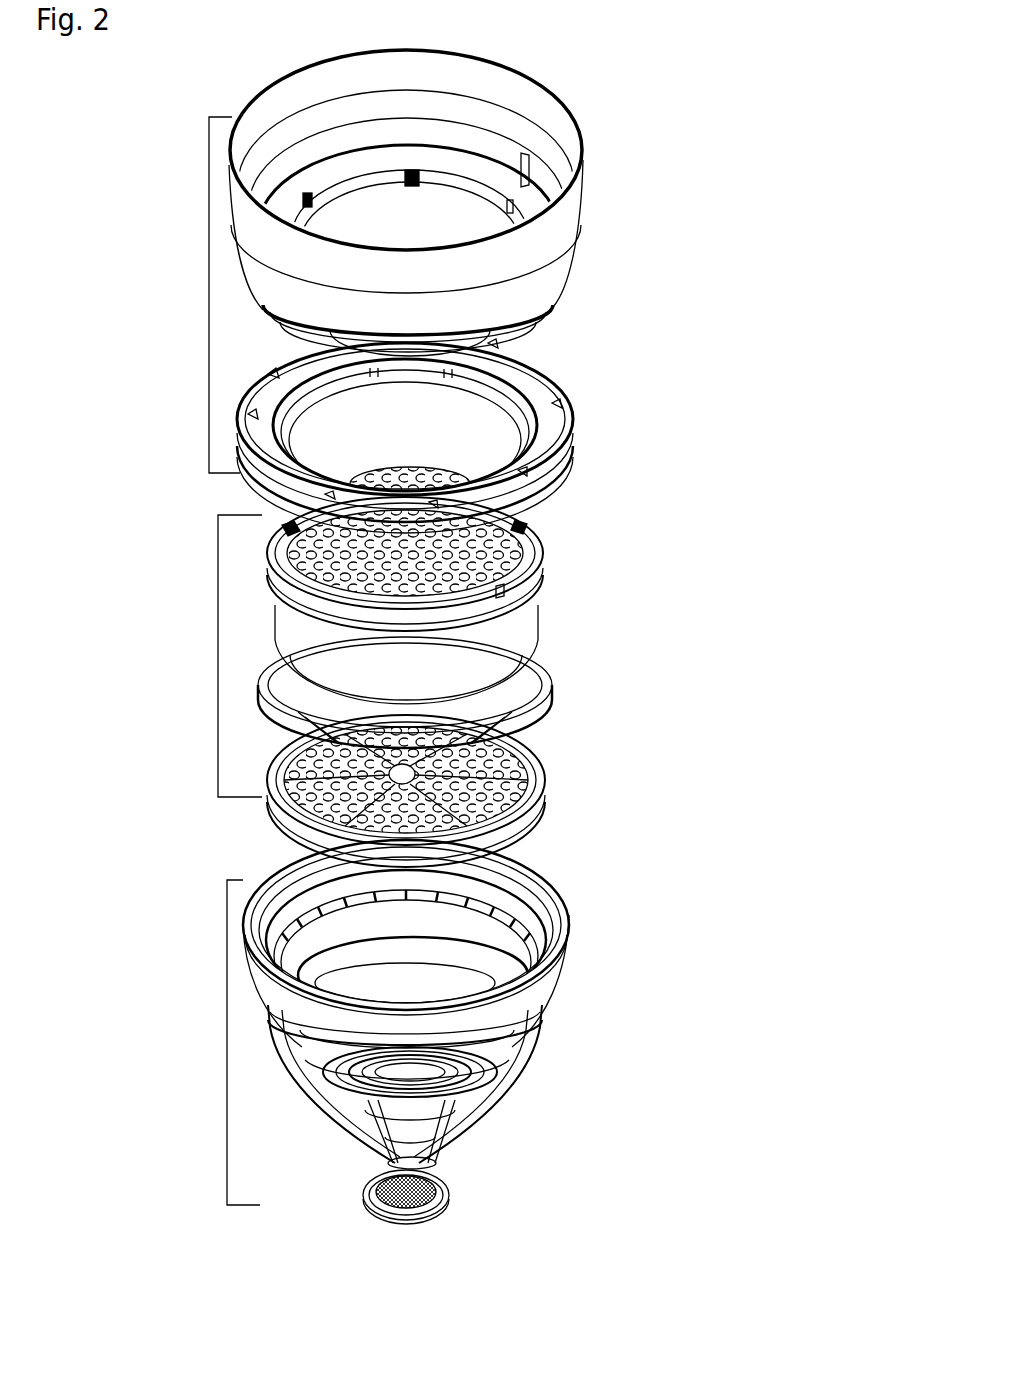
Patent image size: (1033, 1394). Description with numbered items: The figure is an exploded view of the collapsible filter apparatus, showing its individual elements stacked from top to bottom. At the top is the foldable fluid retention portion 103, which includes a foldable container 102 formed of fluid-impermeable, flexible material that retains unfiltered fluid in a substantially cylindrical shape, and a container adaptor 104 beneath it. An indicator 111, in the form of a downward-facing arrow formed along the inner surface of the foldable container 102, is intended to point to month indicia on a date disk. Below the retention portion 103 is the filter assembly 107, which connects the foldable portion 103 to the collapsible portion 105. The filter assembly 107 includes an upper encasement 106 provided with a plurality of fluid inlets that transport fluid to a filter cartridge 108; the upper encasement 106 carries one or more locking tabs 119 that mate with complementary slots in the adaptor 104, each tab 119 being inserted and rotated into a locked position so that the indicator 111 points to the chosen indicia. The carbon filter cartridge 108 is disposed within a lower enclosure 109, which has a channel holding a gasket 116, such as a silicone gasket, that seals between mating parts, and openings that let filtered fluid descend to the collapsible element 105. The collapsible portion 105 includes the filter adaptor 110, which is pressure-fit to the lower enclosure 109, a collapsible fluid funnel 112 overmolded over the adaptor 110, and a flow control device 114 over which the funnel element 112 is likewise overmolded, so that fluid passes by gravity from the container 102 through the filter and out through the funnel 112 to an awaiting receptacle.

The foldable container 102 is at (600, 186).
The foldable fluid retention portion 103 is at (209, 281).
The container adaptor 104 is at (585, 405).
The collapsible funnel element 105 is at (227, 1057).
The upper encasement 106 is at (558, 540).
The filter assembly 107 is at (218, 640).
The filter cartridge 108 is at (557, 630).
The lower enclosure 109 is at (553, 768).
The filter adaptor 110 is at (590, 913).
The indicator 111 is at (527, 165).
The collapsible fluid funnel 112 is at (553, 1064).
The flow control device 114 is at (473, 1205).
The gasket 116 is at (560, 683).
The locking tab 119 is at (505, 587).